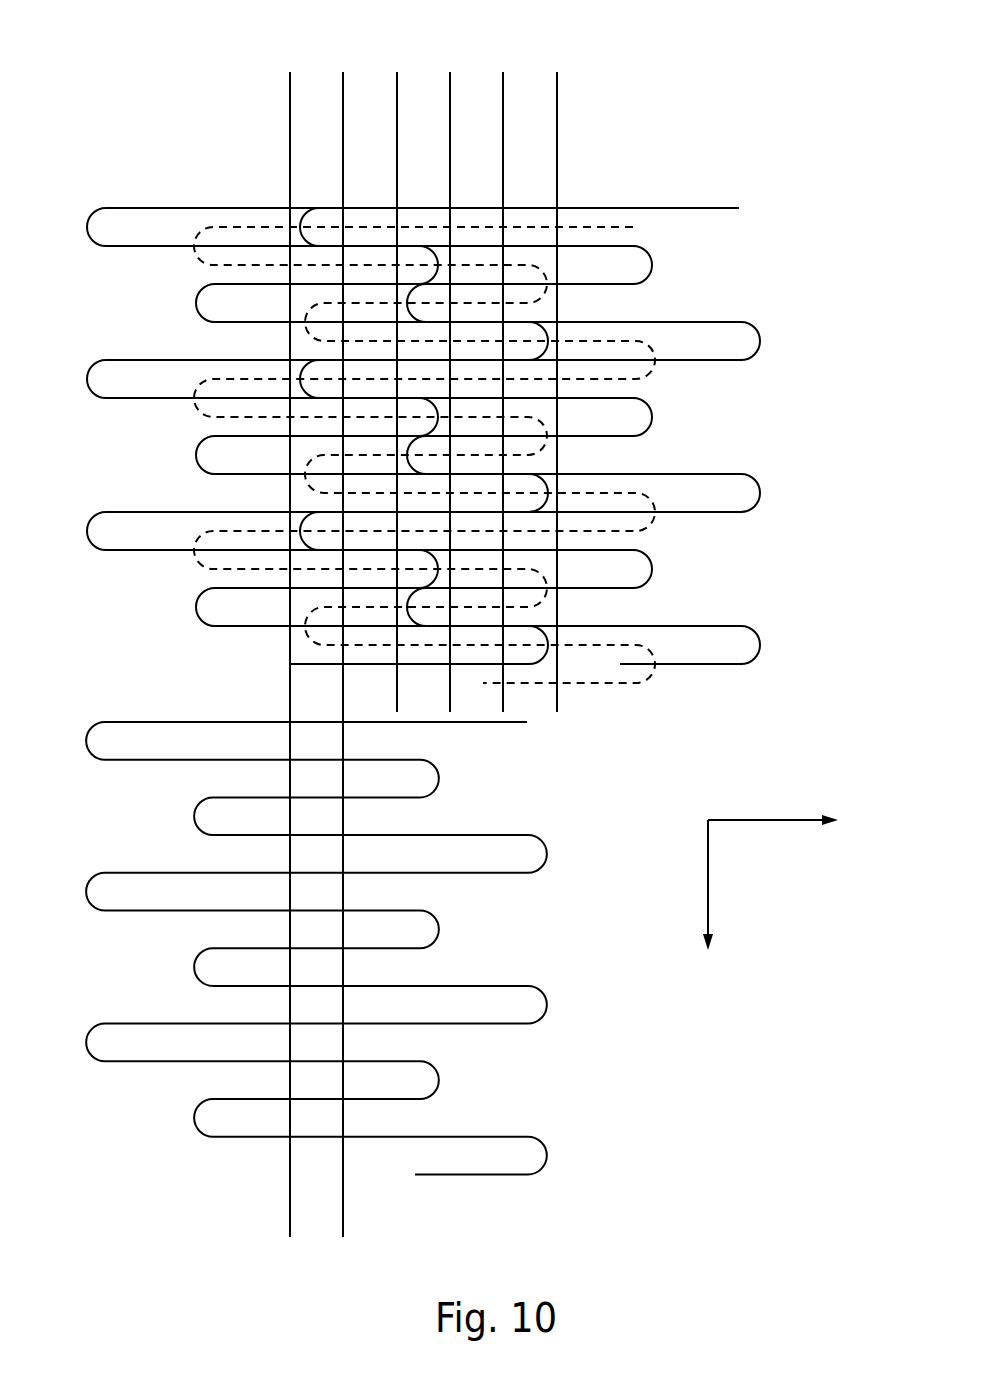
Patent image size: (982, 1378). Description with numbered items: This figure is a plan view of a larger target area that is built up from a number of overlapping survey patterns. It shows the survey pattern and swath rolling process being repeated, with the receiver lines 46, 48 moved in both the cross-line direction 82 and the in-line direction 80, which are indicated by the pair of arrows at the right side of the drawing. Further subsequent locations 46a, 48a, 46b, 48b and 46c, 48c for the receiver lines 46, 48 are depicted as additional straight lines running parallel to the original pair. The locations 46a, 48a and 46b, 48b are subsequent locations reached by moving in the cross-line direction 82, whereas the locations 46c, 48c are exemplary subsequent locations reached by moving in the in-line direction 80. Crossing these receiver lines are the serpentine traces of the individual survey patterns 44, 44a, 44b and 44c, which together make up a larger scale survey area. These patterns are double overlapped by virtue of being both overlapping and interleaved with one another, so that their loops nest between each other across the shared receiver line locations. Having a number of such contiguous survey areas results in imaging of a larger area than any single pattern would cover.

The survey pattern 44 is at (126, 506).
The survey pattern 44a is at (192, 266).
The survey pattern 44b is at (752, 318).
The survey pattern 44c is at (132, 872).
The receiver line 46 is at (290, 133).
The subsequent location of receiver line 46a is at (397, 85).
The subsequent location of receiver line 46b is at (503, 85).
The subsequent location of receiver line 46c is at (290, 1190).
The receiver line 48 is at (343, 85).
The subsequent location of receiver line 48a is at (450, 85).
The subsequent location of receiver line 48b is at (558, 125).
The subsequent location of receiver line 48c is at (343, 1210).
The in-line direction 80 is at (708, 887).
The cross-line direction 82 is at (748, 820).